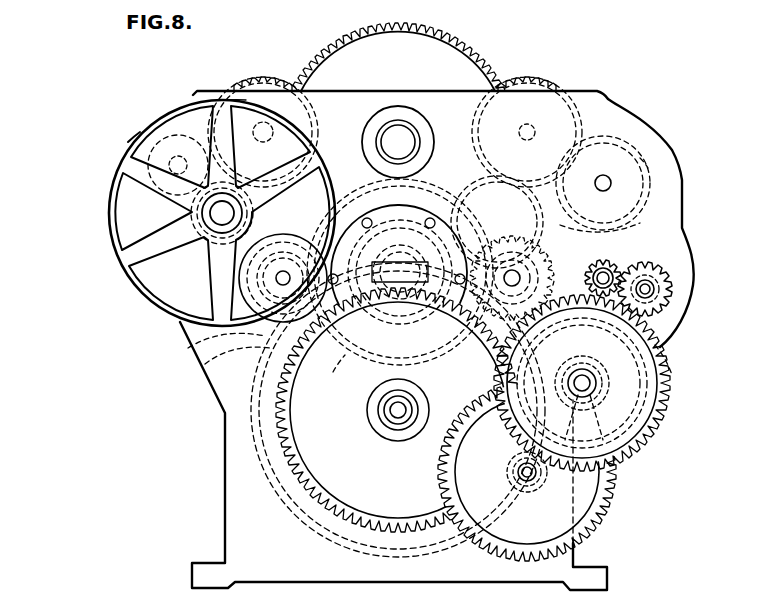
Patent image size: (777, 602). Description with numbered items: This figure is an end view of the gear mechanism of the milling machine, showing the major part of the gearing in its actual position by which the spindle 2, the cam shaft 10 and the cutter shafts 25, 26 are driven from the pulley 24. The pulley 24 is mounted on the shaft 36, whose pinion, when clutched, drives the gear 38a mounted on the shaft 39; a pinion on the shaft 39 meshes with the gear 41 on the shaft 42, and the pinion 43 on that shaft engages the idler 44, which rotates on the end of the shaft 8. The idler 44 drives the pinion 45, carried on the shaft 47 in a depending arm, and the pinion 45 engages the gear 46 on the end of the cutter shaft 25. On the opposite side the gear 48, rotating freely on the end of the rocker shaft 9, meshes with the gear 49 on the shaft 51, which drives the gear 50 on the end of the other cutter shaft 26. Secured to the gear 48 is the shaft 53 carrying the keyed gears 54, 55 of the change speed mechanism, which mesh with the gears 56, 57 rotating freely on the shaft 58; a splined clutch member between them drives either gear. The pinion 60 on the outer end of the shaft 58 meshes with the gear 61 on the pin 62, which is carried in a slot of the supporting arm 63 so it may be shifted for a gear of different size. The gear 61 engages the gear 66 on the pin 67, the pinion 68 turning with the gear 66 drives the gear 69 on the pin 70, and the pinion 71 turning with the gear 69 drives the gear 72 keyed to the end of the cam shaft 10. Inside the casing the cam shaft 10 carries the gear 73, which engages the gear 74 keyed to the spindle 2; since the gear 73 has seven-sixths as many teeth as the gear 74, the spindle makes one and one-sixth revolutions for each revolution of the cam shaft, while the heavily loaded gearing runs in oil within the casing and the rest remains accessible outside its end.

The spindle 2 is at (390, 138).
The shaft 8 is at (283, 278).
The rocker shaft 9 is at (595, 270).
The cam shaft 10 is at (395, 410).
The pulley 24 is at (109, 232).
The cutter shaft 25 is at (232, 96).
The cutter shaft 26 is at (592, 93).
The shaft 36 is at (224, 215).
The gear 38a is at (193, 343).
The shaft 39 is at (240, 296).
The gear 41 is at (355, 370).
The shaft 42 is at (398, 258).
The pinion 43 is at (398, 312).
The idler 44 is at (208, 362).
The pinion 45 is at (135, 140).
The gear 46 is at (262, 80).
The shaft 47 is at (160, 168).
The gear 48 is at (443, 364).
The gear 49 is at (613, 180).
The gear 50 is at (553, 82).
The shaft 51 is at (630, 166).
The shaft 53 is at (574, 372).
The gear 54 is at (495, 186).
The gear 55 is at (487, 206).
The gear 56 is at (550, 236).
The gear 57 is at (642, 223).
The shaft 58 is at (612, 282).
The pinion 60 is at (608, 264).
The gear 61 is at (673, 287).
The pin 62 is at (657, 296).
The supporting arm 63 is at (668, 362).
The gear 66 is at (642, 442).
The pin 67 is at (618, 427).
The pinion 68 is at (602, 397).
The gear 69 is at (600, 518).
The pin 70 is at (535, 478).
The pinion 71 is at (593, 538).
The gear 72 is at (288, 468).
The gear 73 is at (250, 440).
The gear 74 is at (318, 50).